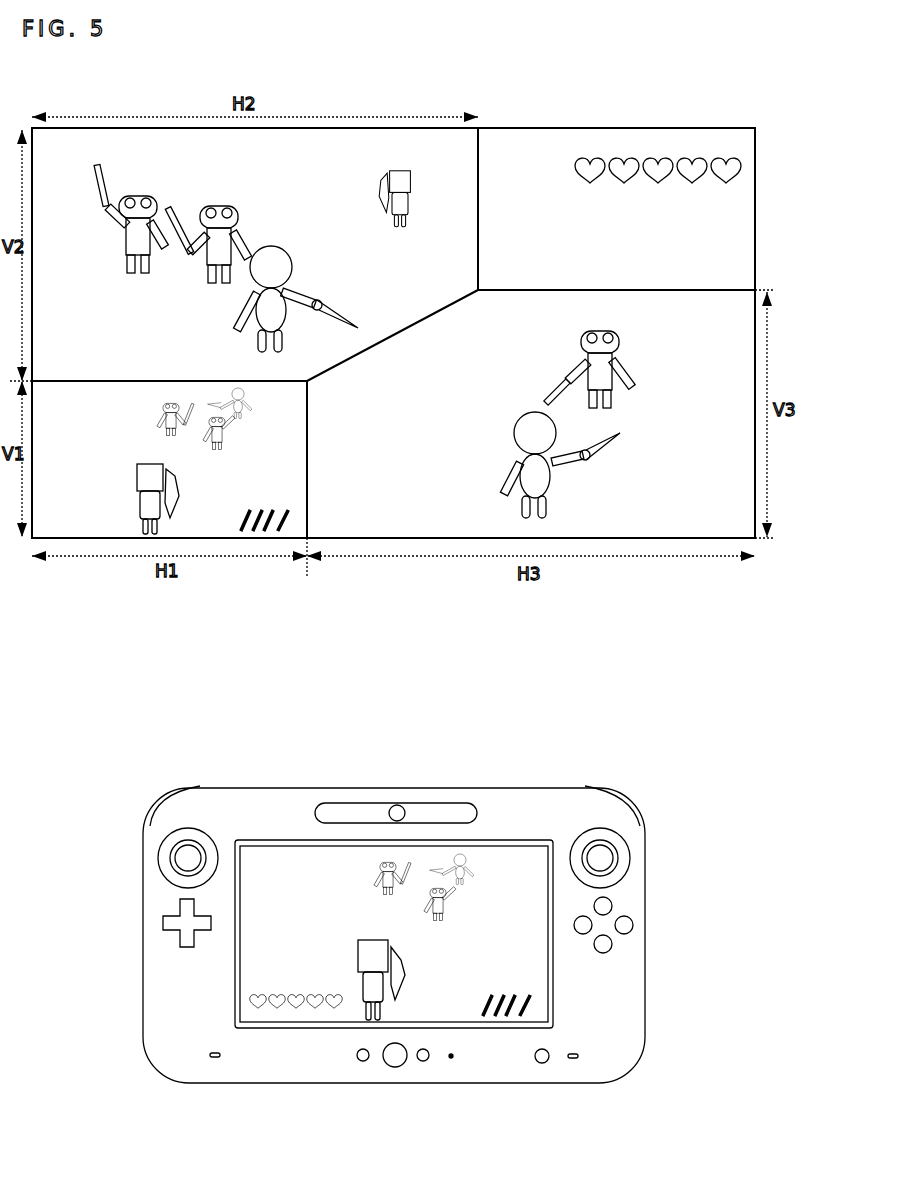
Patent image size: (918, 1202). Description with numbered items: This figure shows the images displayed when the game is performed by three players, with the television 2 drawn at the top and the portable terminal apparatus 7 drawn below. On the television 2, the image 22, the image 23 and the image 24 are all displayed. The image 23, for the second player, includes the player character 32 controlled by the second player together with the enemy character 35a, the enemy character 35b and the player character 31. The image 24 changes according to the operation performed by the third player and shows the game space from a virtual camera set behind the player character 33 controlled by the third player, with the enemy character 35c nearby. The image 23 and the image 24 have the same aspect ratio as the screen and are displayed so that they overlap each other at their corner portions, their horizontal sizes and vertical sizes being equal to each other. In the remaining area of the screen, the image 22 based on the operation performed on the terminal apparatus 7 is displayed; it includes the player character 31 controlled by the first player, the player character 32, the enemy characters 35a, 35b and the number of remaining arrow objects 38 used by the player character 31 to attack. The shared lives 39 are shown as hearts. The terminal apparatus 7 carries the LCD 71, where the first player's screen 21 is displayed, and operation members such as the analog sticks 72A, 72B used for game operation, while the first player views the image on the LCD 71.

The television 2 is at (585, 112).
The terminal device display screen 21 is at (284, 877).
The image 22 is at (74, 413).
The image 23 is at (74, 161).
The image 24 is at (742, 315).
The player character 31 is at (410, 168).
The player character 32 is at (279, 256).
The player character 33 is at (517, 420).
The enemy character 35a is at (222, 206).
The enemy character 35b is at (142, 196).
The enemy character 35c is at (620, 330).
The arrow objects 38 is at (248, 510).
The lives 39 is at (578, 192).
The terminal apparatus 7 is at (535, 790).
The LCD 71 is at (508, 1028).
The left analog stick 72A is at (160, 893).
The right analog stick 72B is at (638, 882).